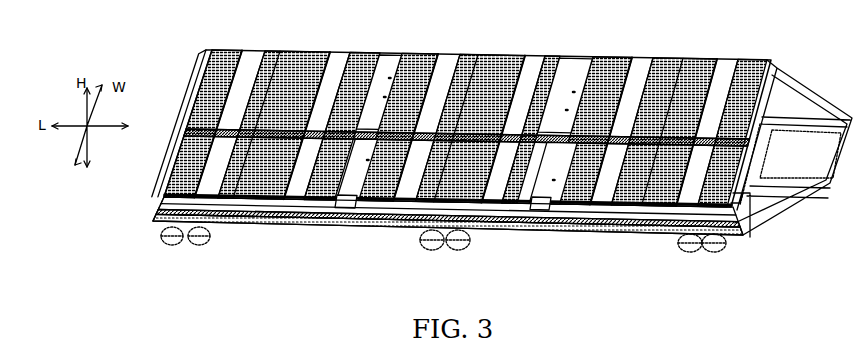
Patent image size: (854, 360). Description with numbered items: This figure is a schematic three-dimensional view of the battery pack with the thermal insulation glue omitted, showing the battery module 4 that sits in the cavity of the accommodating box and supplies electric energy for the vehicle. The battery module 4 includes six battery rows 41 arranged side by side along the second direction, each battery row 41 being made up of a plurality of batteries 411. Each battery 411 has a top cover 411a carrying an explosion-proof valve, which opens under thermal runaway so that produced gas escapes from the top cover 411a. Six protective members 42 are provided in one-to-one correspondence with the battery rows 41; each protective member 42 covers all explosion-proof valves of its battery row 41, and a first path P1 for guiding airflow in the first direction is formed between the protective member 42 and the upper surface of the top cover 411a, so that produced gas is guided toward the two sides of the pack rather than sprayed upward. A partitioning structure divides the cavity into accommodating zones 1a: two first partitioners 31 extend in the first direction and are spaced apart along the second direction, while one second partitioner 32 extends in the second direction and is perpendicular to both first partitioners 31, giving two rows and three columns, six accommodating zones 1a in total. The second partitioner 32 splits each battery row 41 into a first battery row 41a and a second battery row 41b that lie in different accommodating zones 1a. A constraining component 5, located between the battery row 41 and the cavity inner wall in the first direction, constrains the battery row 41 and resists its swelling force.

The accommodating zone 1a is at (753, 207).
The battery module 4 is at (450, 200).
The constraining component 5 is at (641, 236).
The first partitioner 31 is at (540, 209).
The second partitioner 32 is at (775, 141).
The battery row 41 is at (247, 49).
The first battery row 41a is at (200, 82).
The second battery row 41b is at (173, 157).
The protective member 42 is at (341, 51).
The battery 411 is at (479, 53).
The top cover 411a is at (378, 203).
The first path P1 is at (303, 205).